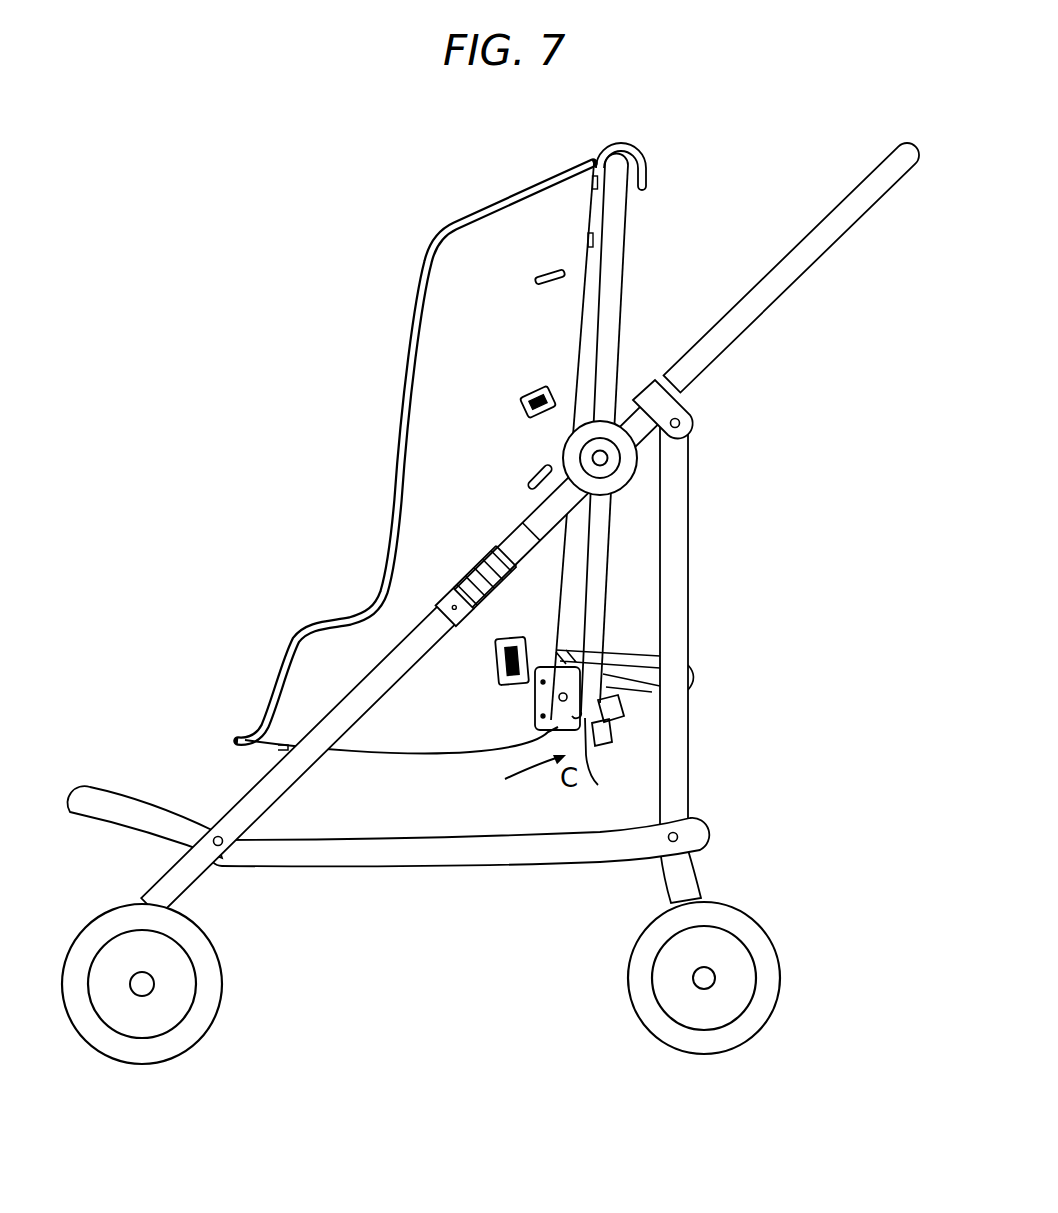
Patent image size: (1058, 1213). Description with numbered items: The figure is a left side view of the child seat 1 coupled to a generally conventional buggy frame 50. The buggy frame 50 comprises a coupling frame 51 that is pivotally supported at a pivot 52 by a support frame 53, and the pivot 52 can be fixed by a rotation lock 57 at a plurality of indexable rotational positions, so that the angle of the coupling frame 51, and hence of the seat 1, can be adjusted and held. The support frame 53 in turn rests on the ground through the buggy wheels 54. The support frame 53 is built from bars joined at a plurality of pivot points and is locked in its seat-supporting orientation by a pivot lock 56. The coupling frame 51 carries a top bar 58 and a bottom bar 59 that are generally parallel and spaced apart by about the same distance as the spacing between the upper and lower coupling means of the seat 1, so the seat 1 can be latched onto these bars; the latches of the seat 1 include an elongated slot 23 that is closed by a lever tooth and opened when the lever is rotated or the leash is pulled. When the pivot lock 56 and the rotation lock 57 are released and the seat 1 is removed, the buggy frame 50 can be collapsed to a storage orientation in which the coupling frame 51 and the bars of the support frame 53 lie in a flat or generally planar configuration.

The seat 1 is at (385, 365).
The elongated slot 23 is at (622, 729).
The buggy frame 50 is at (706, 599).
The coupling frame 51 is at (630, 230).
The pivot 52 is at (603, 458).
The support frame 53 is at (677, 706).
The buggy wheels 54 is at (198, 950).
The pivot lock 56 is at (460, 580).
The rotation lock 57 is at (628, 470).
The top bar 58 is at (622, 162).
The bottom bar 59 is at (612, 762).